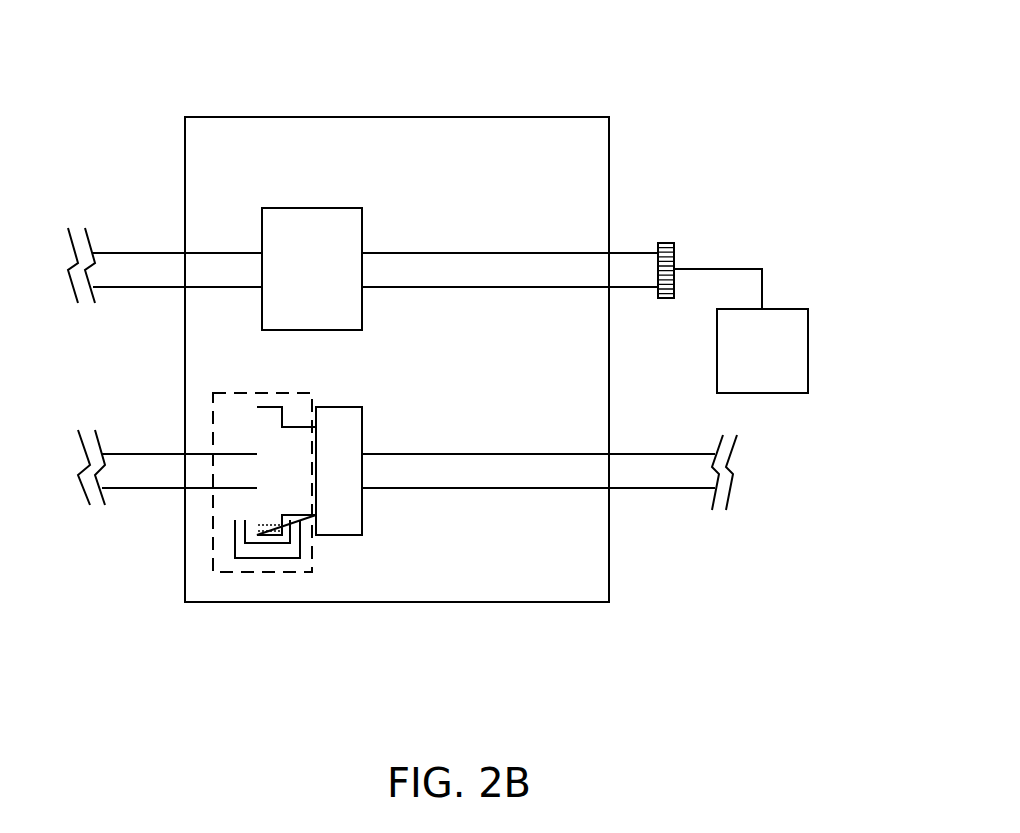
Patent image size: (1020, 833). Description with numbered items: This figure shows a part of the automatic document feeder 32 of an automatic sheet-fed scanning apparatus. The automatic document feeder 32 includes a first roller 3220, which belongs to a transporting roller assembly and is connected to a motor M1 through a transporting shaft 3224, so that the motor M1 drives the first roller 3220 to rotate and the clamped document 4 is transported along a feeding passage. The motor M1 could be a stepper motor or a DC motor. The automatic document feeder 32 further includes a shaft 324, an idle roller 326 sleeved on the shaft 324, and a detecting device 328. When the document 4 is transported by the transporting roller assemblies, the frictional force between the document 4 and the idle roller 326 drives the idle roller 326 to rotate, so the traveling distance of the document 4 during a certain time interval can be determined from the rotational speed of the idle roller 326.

The document 4 is at (413, 125).
The automatic document feeder 32 is at (650, 100).
The first roller 3220 is at (317, 208).
The transporting shaft 3224 is at (620, 287).
The motor M1 is at (793, 309).
The shaft 324 is at (630, 488).
The idle roller 326 is at (335, 535).
The detecting device 328 is at (265, 572).